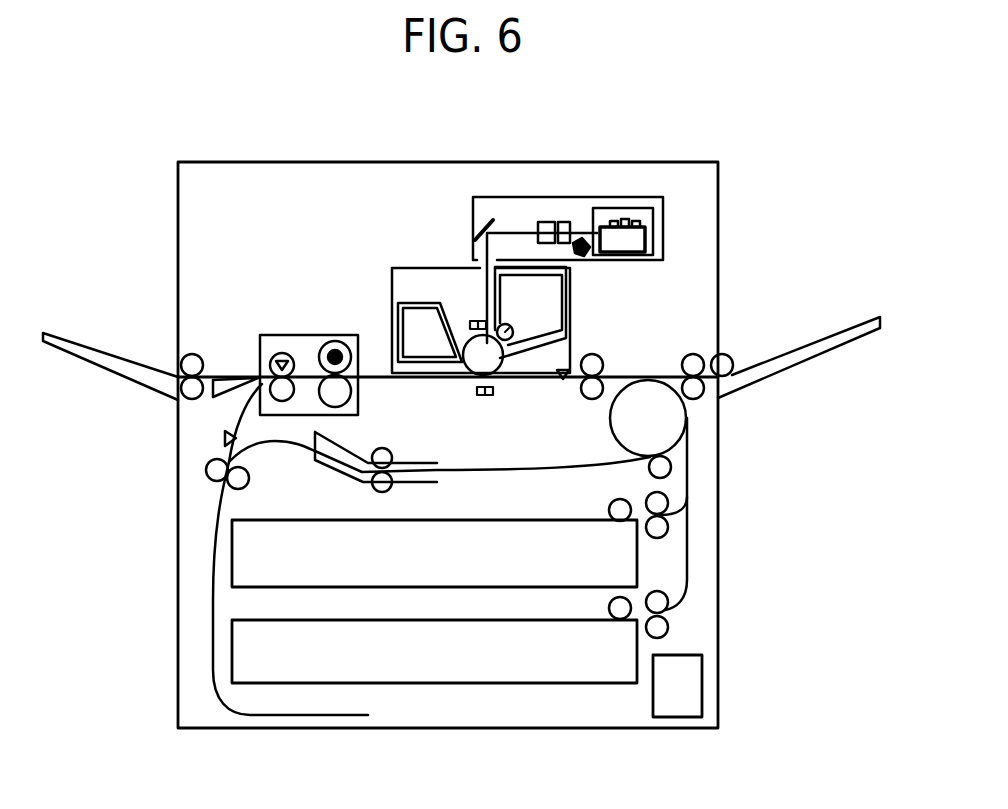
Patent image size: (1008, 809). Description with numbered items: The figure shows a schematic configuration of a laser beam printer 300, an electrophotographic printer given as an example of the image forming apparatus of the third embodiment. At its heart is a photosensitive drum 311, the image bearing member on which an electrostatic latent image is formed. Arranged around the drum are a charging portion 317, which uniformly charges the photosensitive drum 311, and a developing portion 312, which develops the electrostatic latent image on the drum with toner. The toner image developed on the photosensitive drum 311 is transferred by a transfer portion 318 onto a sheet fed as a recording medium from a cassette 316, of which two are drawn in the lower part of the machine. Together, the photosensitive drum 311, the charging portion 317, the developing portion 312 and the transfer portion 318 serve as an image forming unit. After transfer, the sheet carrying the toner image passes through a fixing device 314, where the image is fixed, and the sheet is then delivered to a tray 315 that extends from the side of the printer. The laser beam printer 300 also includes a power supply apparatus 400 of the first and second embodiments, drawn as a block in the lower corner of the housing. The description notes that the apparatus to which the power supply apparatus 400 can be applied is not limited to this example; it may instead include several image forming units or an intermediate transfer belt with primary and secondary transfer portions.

The laser beam printer 300 is at (612, 161).
The photosensitive drum 311 is at (492, 358).
The developing portion 312 is at (510, 329).
The fixing device 314 is at (315, 335).
The tray 315 is at (97, 352).
The cassette 316 is at (615, 563).
The charging portion 317 is at (478, 320).
The transfer portion 318 is at (493, 391).
The power supply apparatus 400 is at (652, 710).